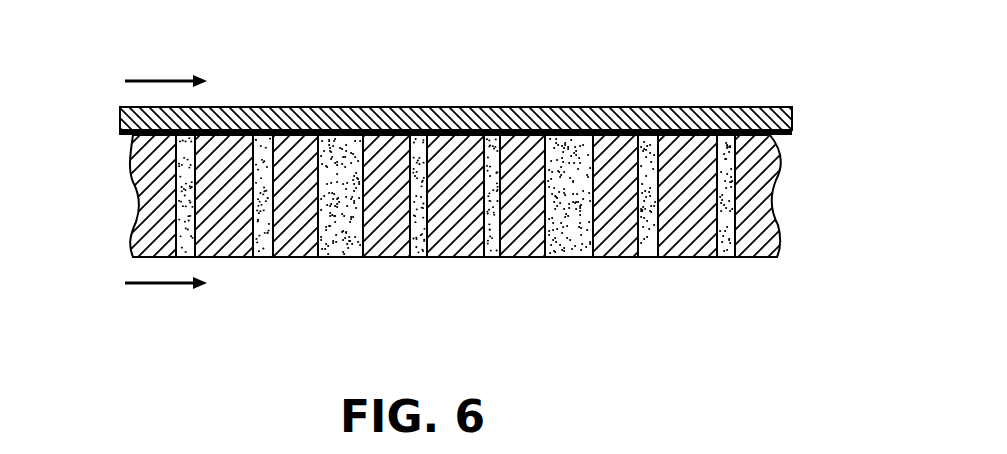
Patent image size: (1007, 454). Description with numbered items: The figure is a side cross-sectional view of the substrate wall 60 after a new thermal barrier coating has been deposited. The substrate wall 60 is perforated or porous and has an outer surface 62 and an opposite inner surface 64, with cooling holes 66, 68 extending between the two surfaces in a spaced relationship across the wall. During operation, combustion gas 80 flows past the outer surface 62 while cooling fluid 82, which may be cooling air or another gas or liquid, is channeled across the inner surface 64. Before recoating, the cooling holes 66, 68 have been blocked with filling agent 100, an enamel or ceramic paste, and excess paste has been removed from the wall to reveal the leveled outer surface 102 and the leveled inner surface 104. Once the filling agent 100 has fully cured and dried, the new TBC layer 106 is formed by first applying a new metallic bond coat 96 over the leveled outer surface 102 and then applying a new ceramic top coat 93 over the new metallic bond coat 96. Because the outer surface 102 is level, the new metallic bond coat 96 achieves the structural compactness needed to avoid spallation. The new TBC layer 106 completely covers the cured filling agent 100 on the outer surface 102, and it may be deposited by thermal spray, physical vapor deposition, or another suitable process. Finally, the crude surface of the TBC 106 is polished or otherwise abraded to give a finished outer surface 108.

The substrate wall 60 is at (636, 274).
The outer surface 62 is at (287, 131).
The inner surface 64 is at (300, 258).
The cooling hole 66 is at (415, 242).
The cooling hole 68 is at (565, 240).
The combustion gas 80 is at (167, 80).
The cooling fluid 82 is at (168, 285).
The new ceramic top coat 93 is at (523, 110).
The new metallic bond coat 96 is at (673, 110).
The filling agent 100 is at (337, 131).
The leveled outer surface 102 is at (584, 122).
The leveled inner surface 104 is at (448, 261).
The new TBC layer 106 is at (102, 122).
The outer surface 108 is at (754, 98).